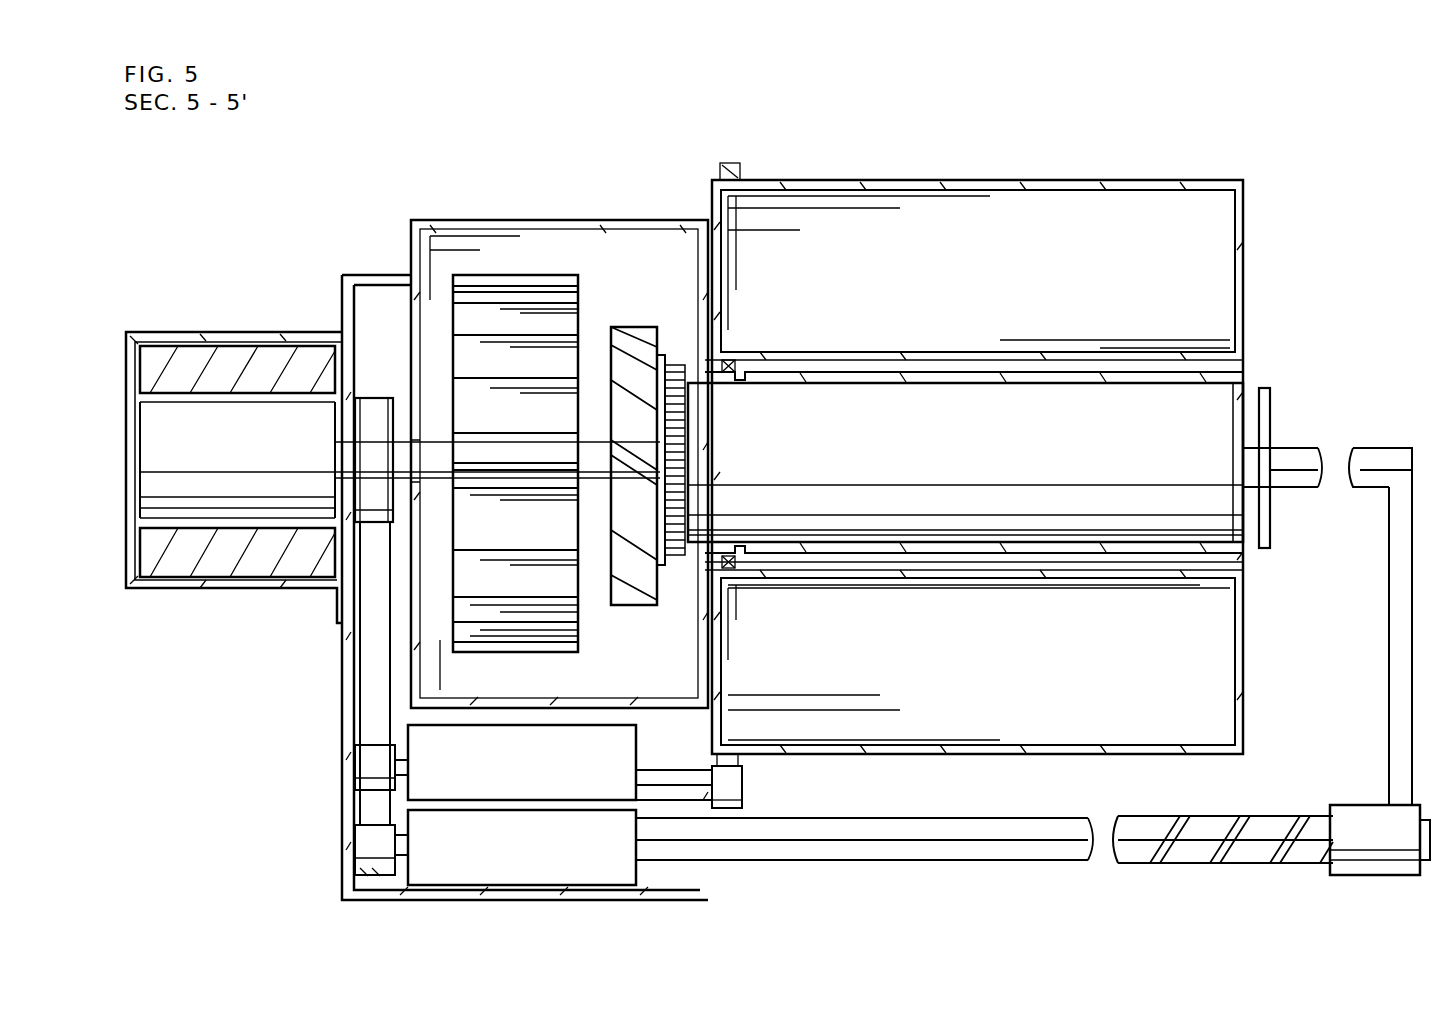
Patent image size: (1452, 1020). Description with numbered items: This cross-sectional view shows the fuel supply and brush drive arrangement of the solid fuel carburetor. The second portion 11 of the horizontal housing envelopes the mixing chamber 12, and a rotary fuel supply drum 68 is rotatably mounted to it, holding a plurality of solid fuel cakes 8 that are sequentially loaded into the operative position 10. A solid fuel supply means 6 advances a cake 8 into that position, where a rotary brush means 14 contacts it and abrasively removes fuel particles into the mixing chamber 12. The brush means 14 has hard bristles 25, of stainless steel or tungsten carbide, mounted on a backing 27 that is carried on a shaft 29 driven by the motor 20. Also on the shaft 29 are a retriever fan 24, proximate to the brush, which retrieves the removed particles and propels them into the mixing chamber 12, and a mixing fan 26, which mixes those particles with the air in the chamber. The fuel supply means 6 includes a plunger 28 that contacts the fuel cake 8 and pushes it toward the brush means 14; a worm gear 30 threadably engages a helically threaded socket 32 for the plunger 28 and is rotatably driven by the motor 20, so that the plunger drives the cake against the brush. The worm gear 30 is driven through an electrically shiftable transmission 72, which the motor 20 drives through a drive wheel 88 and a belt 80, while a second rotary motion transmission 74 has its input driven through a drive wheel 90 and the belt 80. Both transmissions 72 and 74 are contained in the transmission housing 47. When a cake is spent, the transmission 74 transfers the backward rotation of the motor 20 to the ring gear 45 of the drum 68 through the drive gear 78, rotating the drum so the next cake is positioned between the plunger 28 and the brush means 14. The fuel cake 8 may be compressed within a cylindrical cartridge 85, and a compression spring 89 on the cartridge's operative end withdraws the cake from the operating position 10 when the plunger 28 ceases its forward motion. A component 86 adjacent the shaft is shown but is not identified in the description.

The solid fuel supply means 6 is at (1319, 126).
The solid fuel cake 8 is at (1222, 400).
The operative position 10 is at (685, 600).
The second portion of the horizontal housing 11 is at (416, 226).
The mixing chamber 12 is at (620, 670).
The rotary brush means 14 is at (685, 274).
The motor 20 is at (186, 582).
The retriever fan 24 is at (618, 326).
The bristles 25 is at (661, 354).
The mixing fan 26 is at (478, 276).
The backing 27 is at (655, 327).
The plunger 28 is at (1272, 412).
The shaft 29 is at (410, 450).
The worm gear 30 is at (1260, 822).
The helically threaded socket 32 is at (1352, 806).
The ring gear 45 is at (744, 170).
The transmission housing 47 is at (345, 660).
The rotary fuel supply drum 68 is at (1245, 224).
The electrically shiftable transmission 72 is at (744, 847).
The rotary motion transmission 74 is at (553, 762).
The drive gear 78 is at (745, 792).
The belt 80 is at (372, 686).
The cylindrical cartridge 85 is at (1128, 380).
The collar 86 is at (375, 410).
The drive wheel 88 is at (370, 848).
The spring 89 is at (735, 358).
The drive wheel 90 is at (370, 770).